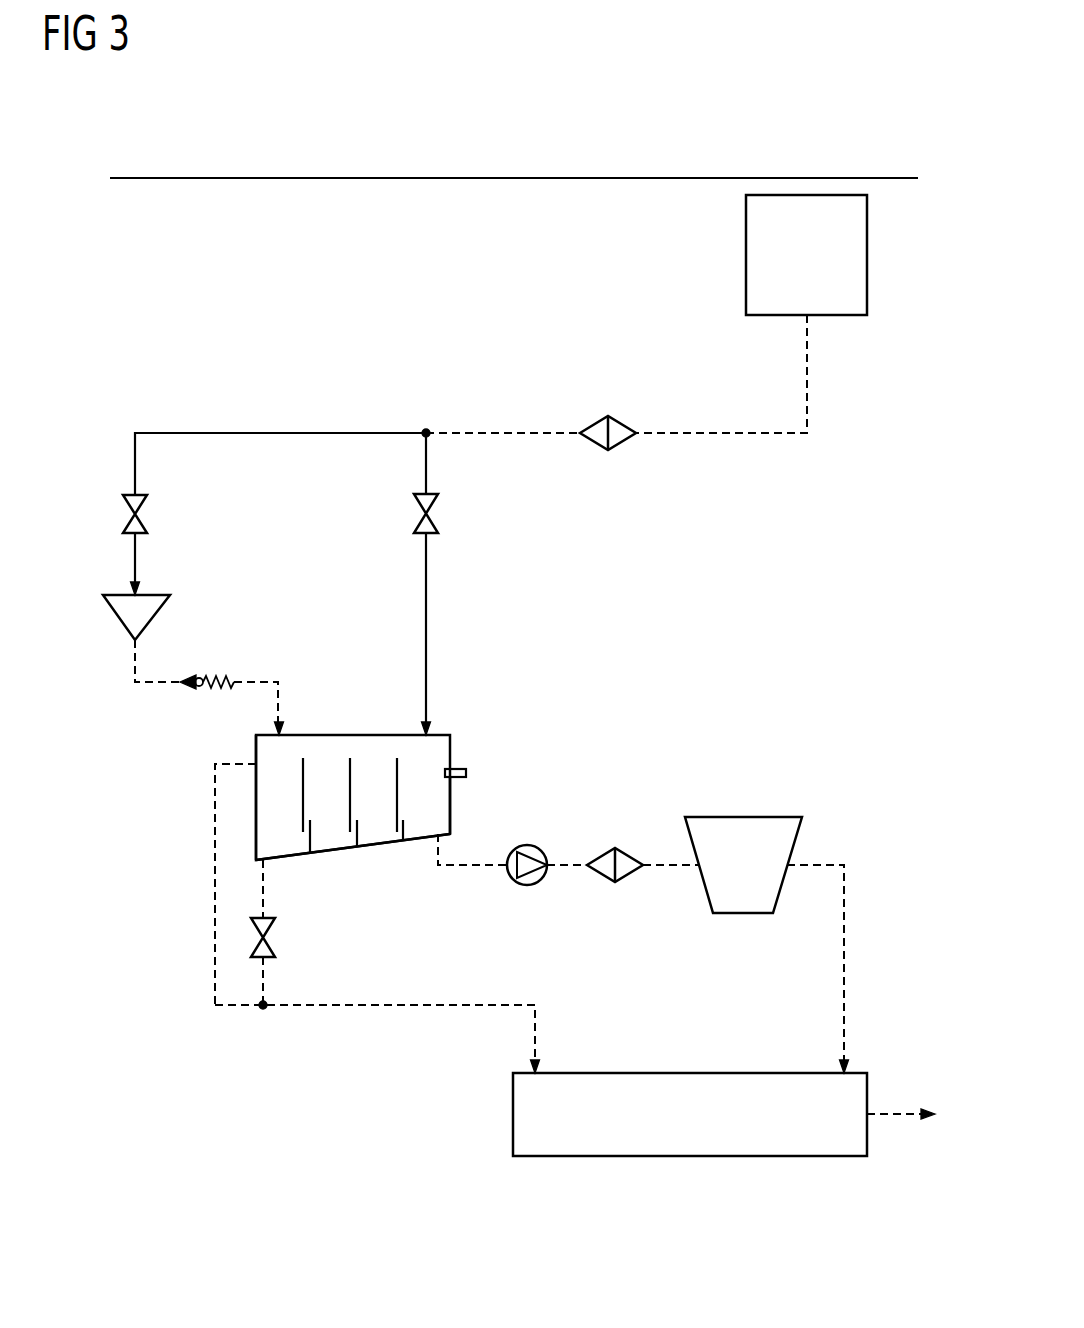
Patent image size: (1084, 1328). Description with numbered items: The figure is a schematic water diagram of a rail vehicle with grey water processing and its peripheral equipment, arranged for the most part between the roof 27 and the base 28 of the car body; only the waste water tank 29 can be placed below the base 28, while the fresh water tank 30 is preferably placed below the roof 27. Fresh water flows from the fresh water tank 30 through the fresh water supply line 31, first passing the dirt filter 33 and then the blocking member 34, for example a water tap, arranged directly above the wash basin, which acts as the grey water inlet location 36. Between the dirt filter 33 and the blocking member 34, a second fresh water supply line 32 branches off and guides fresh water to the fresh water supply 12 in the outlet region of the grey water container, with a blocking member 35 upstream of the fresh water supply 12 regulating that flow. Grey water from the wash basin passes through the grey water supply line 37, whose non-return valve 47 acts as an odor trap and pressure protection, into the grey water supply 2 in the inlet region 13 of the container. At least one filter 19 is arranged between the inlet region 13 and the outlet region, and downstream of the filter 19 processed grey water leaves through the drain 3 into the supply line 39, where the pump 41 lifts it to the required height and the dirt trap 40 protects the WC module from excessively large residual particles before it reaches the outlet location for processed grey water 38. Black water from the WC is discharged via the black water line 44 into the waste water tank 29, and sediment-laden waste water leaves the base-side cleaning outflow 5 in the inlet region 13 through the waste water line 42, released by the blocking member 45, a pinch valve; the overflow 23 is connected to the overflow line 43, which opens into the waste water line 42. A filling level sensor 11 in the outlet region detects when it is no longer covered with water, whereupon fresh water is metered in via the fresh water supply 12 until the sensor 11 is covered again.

The grey water supply 2 is at (283, 731).
The drain 3 is at (445, 828).
The cleaning outflow 5 is at (263, 858).
The filling level sensor 11 is at (466, 773).
The fresh water supply 12 is at (438, 732).
The inlet region 13 is at (263, 817).
The filter 19 is at (305, 780).
The overflow 23 is at (257, 763).
The roof 27 is at (820, 178).
The base 28 is at (886, 1016).
The waste water tank 29 is at (695, 1157).
The fresh water tank 30 is at (868, 255).
The fresh water supply line 31 is at (314, 433).
The fresh water supply line 32 is at (426, 460).
The dirt filter 33 is at (597, 417).
The blocking member 34 is at (140, 515).
The blocking member 35 is at (430, 515).
The grey water inlet location 36 is at (165, 605).
The grey water supply line 37 is at (160, 683).
The outlet location for processed grey water 38 is at (738, 817).
The supply line for processed grey water 39 is at (570, 867).
The dirt trap 40 is at (635, 875).
The pump 41 is at (517, 882).
The waste water line 42 is at (347, 1007).
The overflow line 43 is at (217, 873).
The black water line 44 is at (845, 945).
The blocking member 45 is at (267, 942).
The non-return valve 47 is at (228, 677).